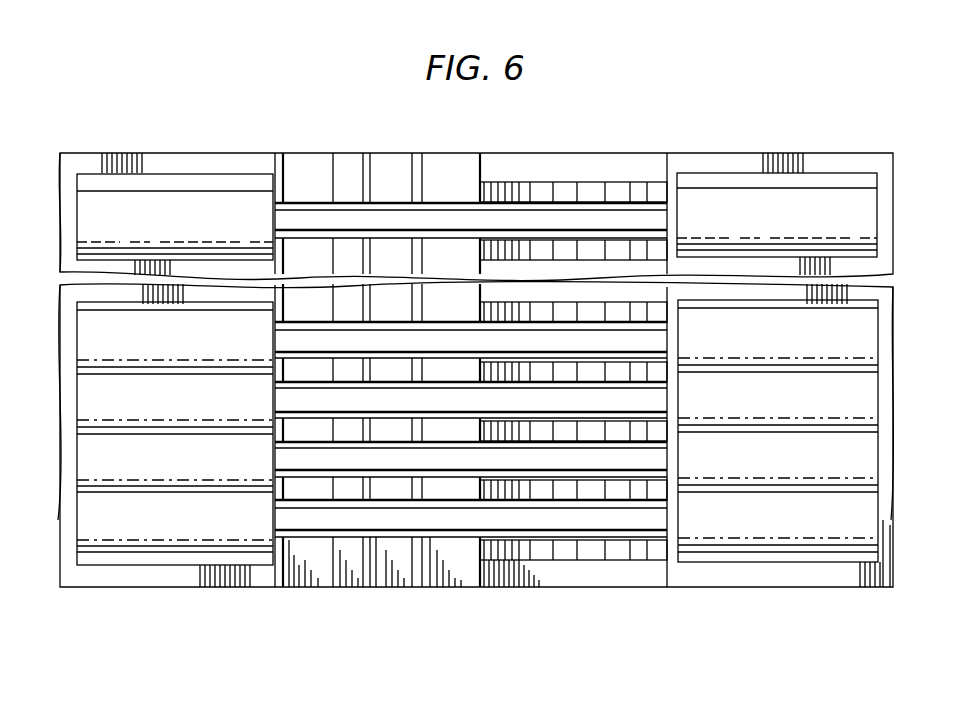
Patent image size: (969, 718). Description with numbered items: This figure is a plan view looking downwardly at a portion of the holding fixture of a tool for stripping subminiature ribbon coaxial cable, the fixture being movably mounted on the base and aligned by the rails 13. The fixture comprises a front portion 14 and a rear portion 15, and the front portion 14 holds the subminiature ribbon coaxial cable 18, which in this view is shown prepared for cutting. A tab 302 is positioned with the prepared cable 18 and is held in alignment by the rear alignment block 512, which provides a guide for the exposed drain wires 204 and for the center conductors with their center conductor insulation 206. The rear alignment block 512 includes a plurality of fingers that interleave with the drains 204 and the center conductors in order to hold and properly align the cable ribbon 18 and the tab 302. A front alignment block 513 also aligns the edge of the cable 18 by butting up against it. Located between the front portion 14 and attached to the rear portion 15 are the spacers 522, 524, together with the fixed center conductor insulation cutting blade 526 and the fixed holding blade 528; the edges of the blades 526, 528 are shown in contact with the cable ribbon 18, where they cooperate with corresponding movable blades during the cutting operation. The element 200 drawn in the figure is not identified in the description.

The rails 13 is at (80, 150).
The front portion 14 is at (172, 158).
The rear portion 15 is at (783, 153).
The subminiature ribbon coaxial cable 18 is at (173, 575).
The tab 302 is at (785, 574).
The connector block 200 is at (238, 182).
The drain wires 204 is at (320, 235).
The center conductor insulation 206 is at (393, 220).
The rear alignment block 512 is at (572, 562).
The front alignment block 513 is at (275, 583).
The spacer 522 is at (310, 585).
The spacer 524 is at (448, 590).
The fixed center conductor insulation cutting blade 526 is at (352, 590).
The fixed holding blade 528 is at (390, 590).